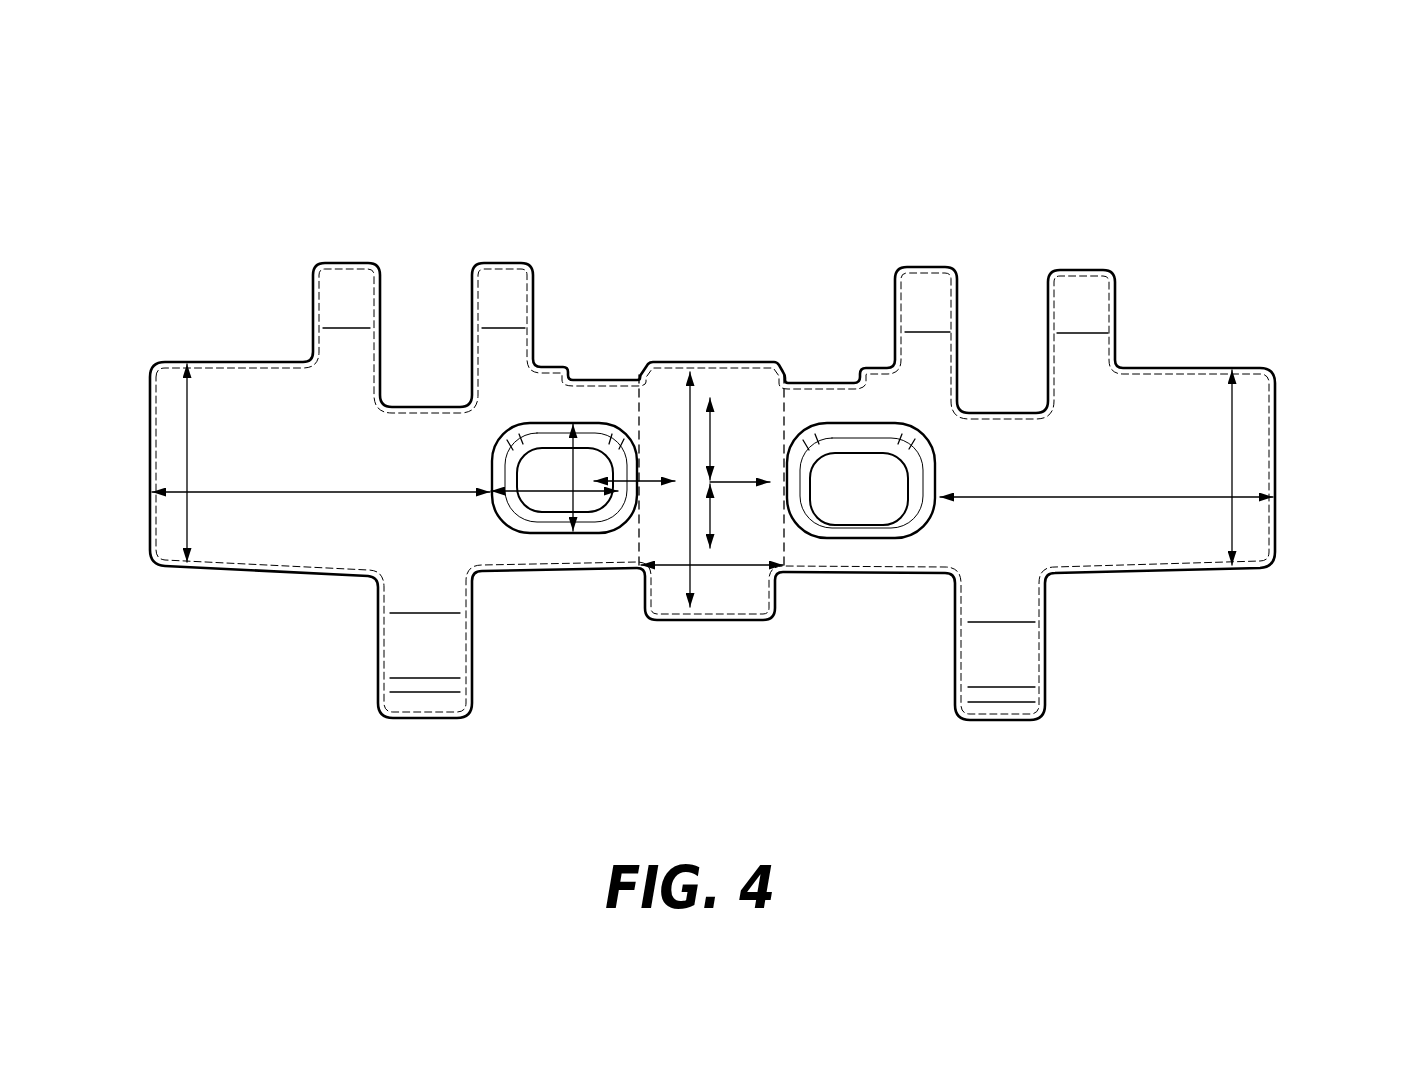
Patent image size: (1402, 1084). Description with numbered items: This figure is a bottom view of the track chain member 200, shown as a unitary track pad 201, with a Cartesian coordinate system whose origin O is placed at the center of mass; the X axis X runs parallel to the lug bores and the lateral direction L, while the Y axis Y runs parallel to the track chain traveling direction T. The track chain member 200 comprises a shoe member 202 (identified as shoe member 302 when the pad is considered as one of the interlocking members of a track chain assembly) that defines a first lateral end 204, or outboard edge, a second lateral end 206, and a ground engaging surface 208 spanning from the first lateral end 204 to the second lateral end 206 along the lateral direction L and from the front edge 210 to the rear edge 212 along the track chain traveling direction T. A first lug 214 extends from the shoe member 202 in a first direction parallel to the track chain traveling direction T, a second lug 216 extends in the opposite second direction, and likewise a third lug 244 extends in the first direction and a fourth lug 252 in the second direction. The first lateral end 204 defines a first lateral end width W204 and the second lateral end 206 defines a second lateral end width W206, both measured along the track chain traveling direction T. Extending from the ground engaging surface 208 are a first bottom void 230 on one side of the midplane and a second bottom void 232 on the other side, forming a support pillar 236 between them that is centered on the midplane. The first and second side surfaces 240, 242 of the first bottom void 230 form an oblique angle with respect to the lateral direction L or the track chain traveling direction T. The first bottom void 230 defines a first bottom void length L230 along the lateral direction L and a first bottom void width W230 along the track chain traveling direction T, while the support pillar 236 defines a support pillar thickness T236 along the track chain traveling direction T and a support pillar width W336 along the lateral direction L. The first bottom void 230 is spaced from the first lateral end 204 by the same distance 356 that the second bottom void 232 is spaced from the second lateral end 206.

The track chain member 200 is at (707, 176).
The track pad 201 is at (877, 334).
The shoe member 202 is at (1178, 552).
The first lateral end 204 is at (152, 510).
The second lateral end 206 is at (1280, 492).
The ground engaging surface 208 is at (1000, 515).
The front edge 210 is at (235, 361).
The rear edge 212 is at (292, 578).
The first lug 214 is at (345, 263).
The second lug 216 is at (420, 714).
The first bottom void 230 is at (560, 522).
The second bottom void 232 is at (884, 508).
The support pillar 236 is at (786, 380).
The first side surface 240 is at (500, 456).
The second side surface 242 is at (639, 481).
The third lug 244 is at (1088, 283).
The fourth lug 252 is at (1000, 714).
The shoe member 302 is at (375, 552).
The distance 356 is at (300, 490).
The first lateral end width W204 is at (190, 428).
The second lateral end width W206 is at (1236, 398).
The first bottom void width W230 is at (573, 428).
The first bottom void length L230 is at (528, 497).
The support pillar thickness T236 is at (695, 400).
The support pillar width W336 is at (750, 568).
The track chain traveling direction T is at (712, 436).
The X-axis X is at (749, 481).
The Y-axis Y is at (725, 522).
The lateral direction L is at (645, 468).
The origin O is at (698, 490).